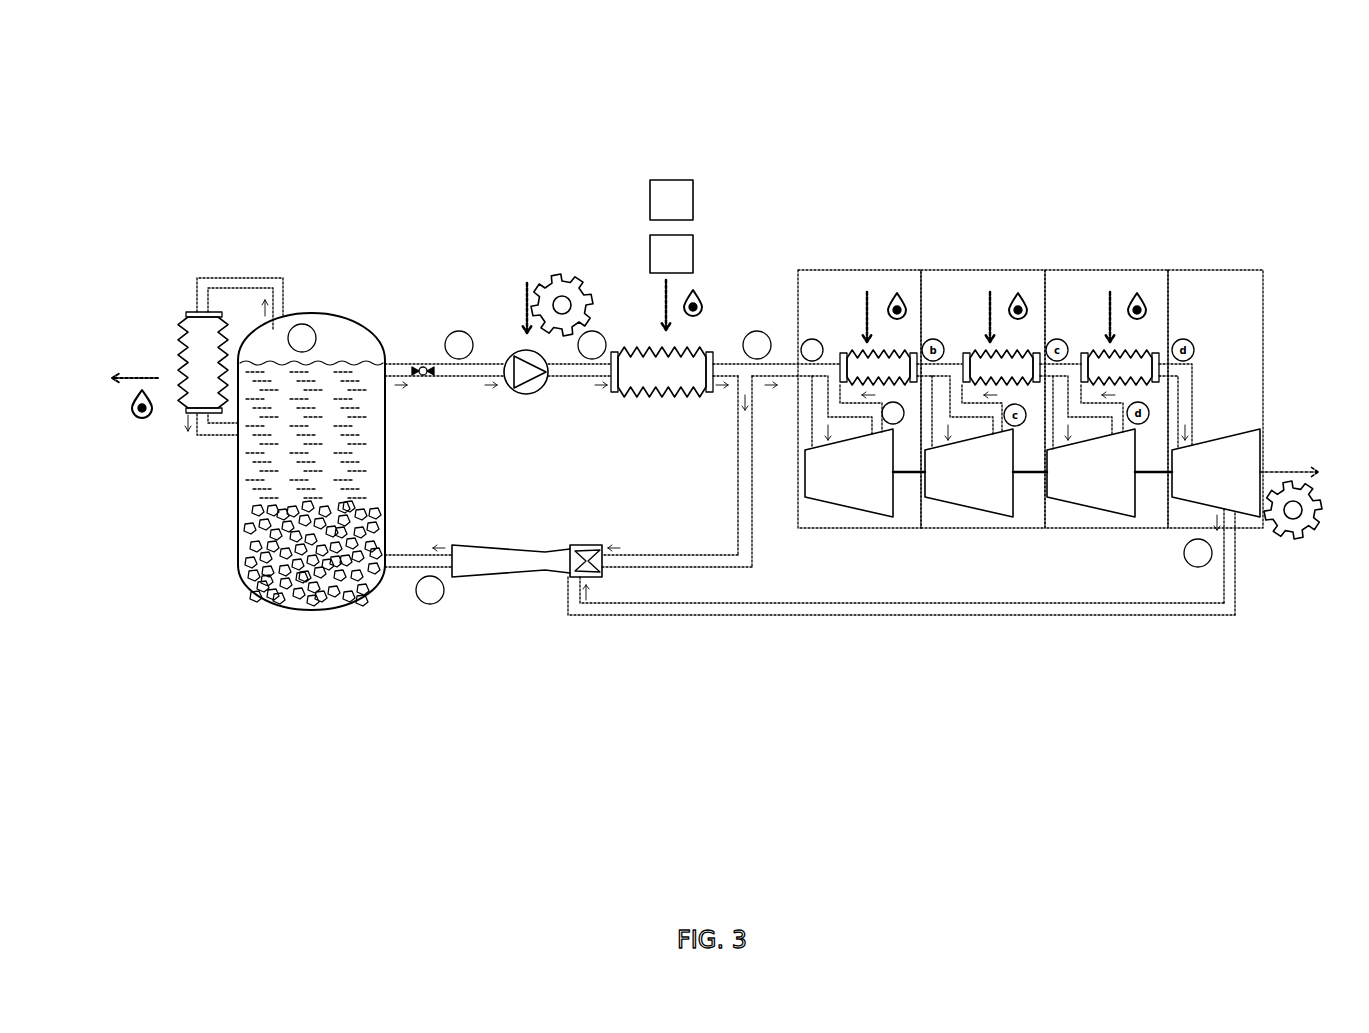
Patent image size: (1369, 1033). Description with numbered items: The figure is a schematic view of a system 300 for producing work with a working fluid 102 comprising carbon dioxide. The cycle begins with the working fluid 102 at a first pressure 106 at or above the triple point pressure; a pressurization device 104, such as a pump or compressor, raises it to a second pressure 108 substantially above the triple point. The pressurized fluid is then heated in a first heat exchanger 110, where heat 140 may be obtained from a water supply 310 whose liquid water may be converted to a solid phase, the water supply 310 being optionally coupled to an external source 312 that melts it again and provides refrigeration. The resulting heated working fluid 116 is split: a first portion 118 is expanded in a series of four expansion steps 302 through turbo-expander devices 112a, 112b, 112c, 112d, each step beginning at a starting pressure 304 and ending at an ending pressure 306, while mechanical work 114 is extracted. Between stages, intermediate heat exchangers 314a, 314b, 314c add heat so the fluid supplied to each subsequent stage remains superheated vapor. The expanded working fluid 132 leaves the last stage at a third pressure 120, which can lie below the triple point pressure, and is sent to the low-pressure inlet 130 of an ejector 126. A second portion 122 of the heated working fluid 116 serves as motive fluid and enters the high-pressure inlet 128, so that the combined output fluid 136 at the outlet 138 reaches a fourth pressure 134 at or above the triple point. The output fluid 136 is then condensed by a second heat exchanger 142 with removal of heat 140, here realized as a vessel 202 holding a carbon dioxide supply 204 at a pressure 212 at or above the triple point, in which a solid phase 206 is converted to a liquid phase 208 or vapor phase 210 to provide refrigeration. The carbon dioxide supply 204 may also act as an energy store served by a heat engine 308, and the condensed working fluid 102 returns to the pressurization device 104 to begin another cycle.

The system for producing work 300 is at (1222, 137).
The working fluid 102 is at (452, 378).
The pressurization device 104 is at (510, 358).
The first pressure 106 is at (462, 330).
The second pressure 108 is at (600, 332).
The first heat exchanger 110 is at (707, 346).
The turbo-expander device 112a is at (857, 490).
The turbo-expander device 112b is at (1002, 503).
The turbo-expander device 112c is at (1122, 493).
The turbo-expander device 112d is at (1231, 458).
The mechanical work 114 is at (1308, 505).
The heated working fluid 116 is at (727, 383).
The first portion of the heated working fluid 118 is at (782, 372).
The third pressure 120 is at (1212, 565).
The second portion of the heated working fluid 122 is at (700, 562).
The ejector 126 is at (513, 545).
The high-pressure inlet 128 is at (598, 575).
The low-pressure inlet 130 is at (558, 573).
The expanded working fluid 132 is at (1053, 605).
The fourth pressure 134 is at (418, 593).
The output fluid 136 is at (413, 566).
The outlet of the ejector 138 is at (449, 570).
The heat 140 is at (138, 418).
The second heat exchanger 142 is at (204, 318).
The vessel 202 is at (255, 588).
The carbon dioxide supply 204 is at (168, 555).
The solid phase 206 is at (303, 590).
The liquid phase 208 is at (258, 443).
The vapor phase 210 is at (357, 338).
The pressure 212 is at (294, 324).
The expansion steps 302 is at (820, 273).
The starting pressure 304 is at (819, 342).
The ending pressure 306 is at (897, 423).
The heat engine 308 is at (187, 345).
The water supply 310 is at (697, 252).
The external source 312 is at (650, 180).
The intermediate heat exchanger 314a is at (879, 353).
The intermediate heat exchanger 314b is at (1031, 368).
The intermediate heat exchanger 314c is at (1150, 360).